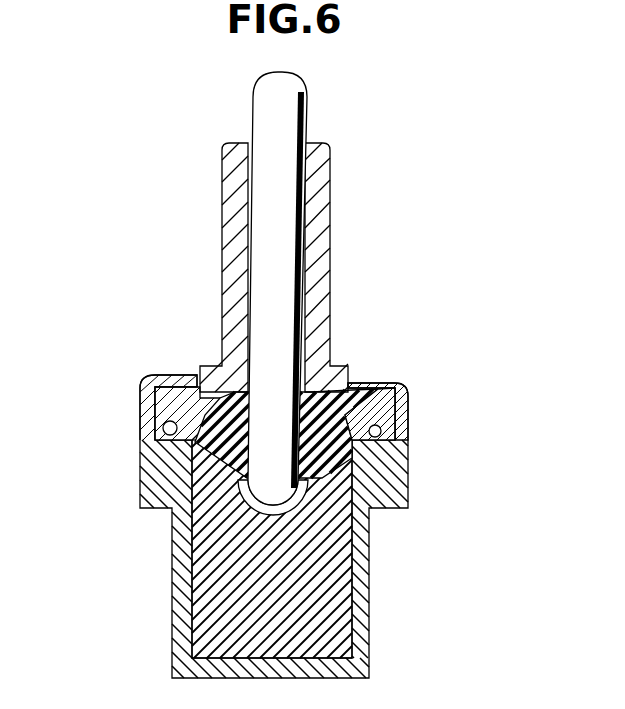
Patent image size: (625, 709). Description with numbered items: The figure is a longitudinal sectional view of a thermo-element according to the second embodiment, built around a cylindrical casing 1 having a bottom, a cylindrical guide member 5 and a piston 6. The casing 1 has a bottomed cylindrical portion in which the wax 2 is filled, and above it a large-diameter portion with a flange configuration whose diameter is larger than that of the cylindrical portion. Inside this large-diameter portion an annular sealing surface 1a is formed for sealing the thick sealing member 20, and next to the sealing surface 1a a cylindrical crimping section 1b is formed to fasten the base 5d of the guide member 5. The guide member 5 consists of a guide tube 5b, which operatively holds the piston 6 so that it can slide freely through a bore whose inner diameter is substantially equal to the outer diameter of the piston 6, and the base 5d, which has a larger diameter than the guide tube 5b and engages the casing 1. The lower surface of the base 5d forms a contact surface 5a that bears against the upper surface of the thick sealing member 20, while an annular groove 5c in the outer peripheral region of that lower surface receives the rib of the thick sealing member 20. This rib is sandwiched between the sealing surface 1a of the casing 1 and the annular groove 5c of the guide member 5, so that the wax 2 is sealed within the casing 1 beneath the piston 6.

The casing 1 is at (395, 484).
The sealing surface 1a is at (163, 428).
The crimping section 1b is at (160, 380).
The wax 2 is at (210, 583).
The guide member 5 is at (318, 237).
The contact surface 5a is at (221, 398).
The guide tube 5b is at (298, 172).
The annular groove 5c is at (382, 431).
The base 5d is at (398, 386).
The piston 6 is at (272, 120).
The thick sealing member 20 is at (160, 377).